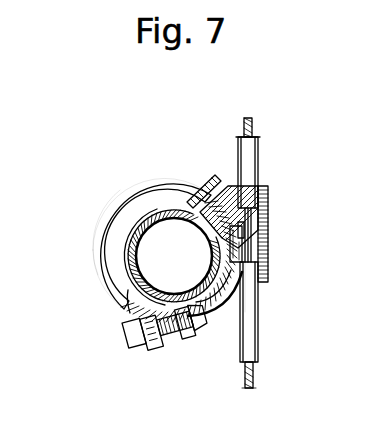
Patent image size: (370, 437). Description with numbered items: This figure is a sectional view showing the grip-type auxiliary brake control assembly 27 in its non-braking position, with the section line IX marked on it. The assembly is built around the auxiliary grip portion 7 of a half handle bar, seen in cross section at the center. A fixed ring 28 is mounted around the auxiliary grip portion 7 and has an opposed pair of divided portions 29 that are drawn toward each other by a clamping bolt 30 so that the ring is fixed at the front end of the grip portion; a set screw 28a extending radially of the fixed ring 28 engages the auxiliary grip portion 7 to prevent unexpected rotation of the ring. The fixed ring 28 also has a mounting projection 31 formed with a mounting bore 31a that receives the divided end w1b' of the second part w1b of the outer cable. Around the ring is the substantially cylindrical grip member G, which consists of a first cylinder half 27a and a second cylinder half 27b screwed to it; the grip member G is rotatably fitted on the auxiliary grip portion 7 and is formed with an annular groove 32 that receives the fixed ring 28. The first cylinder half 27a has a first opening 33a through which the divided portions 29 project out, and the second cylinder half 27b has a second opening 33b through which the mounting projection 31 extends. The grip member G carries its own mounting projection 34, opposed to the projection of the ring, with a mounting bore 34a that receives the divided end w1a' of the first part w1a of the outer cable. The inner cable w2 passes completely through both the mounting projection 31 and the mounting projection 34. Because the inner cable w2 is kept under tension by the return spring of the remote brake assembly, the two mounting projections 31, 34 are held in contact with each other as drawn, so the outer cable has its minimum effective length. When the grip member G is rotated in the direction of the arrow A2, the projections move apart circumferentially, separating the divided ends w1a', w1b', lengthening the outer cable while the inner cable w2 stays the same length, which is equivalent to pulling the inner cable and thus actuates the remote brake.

The auxiliary grip portion 7 is at (160, 200).
The grip-type auxiliary brake control assembly 27 is at (298, 217).
The first cylinder half 27a is at (103, 290).
The second cylinder half 27b is at (120, 214).
The fixed ring 28 is at (123, 313).
The set screw 28a is at (190, 184).
The divided portions 29 is at (178, 335).
The clamping bolt 30 is at (140, 338).
The mounting projection 31 is at (273, 197).
The mounting bore 31a is at (226, 183).
The annular groove 32 is at (98, 222).
The first opening 33a is at (226, 298).
The second opening 33b is at (150, 211).
The mounting projection 34 is at (270, 244).
The mounting bore 34a is at (245, 288).
The first part of outer cable w1a is at (288, 324).
The divided end of outer cable first part w1a' is at (293, 283).
The second part of outer cable w1b is at (283, 161).
The divided end of outer cable second part w1b' is at (307, 193).
The inner cable w2 is at (249, 118).
The arrow A2 is at (53, 320).
The grip member G is at (96, 270).
The section line IX is at (72, 200).